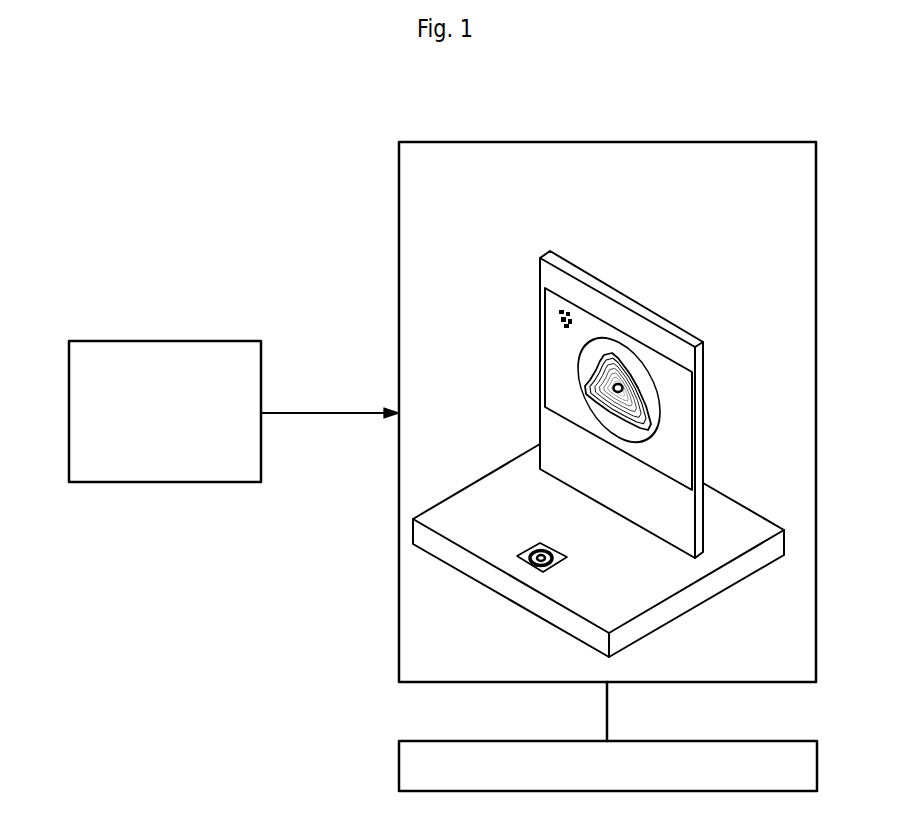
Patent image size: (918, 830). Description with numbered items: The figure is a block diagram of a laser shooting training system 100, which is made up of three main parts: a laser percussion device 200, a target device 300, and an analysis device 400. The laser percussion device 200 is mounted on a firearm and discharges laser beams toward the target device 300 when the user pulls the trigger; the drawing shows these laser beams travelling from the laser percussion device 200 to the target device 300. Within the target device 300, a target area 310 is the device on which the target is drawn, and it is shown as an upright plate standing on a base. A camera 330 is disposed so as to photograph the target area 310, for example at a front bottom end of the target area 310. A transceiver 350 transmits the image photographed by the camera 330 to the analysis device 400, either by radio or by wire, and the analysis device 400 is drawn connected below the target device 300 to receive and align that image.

The laser shooting training system 100 is at (180, 119).
The laser percussion device 200 is at (222, 340).
The target device 300 is at (755, 141).
The target area 310 is at (687, 410).
The camera 330 is at (537, 543).
The transceiver 350 is at (495, 583).
The analysis device 400 is at (397, 763).